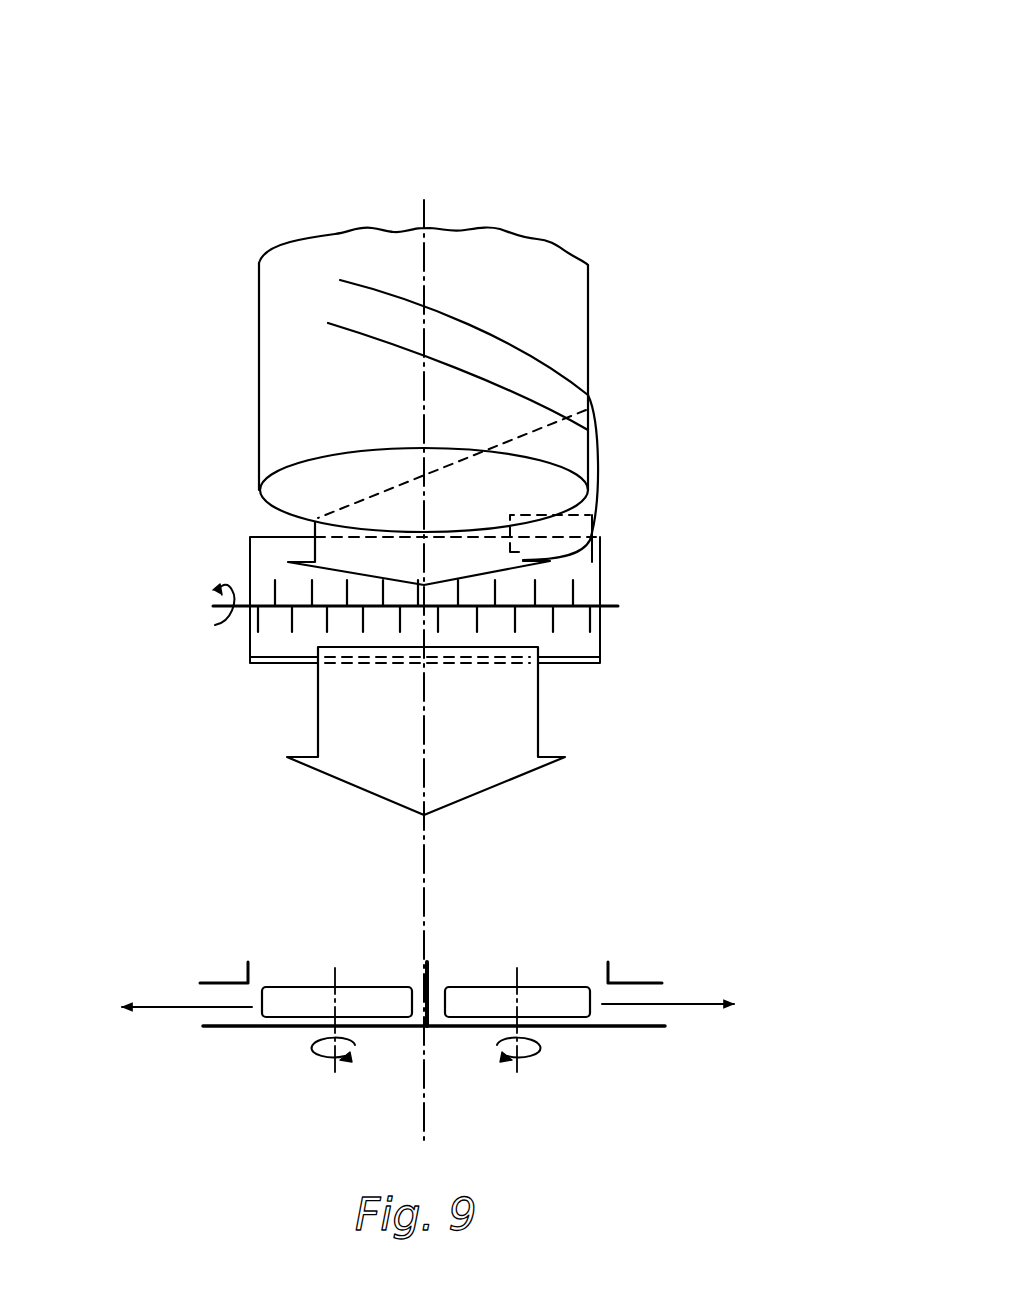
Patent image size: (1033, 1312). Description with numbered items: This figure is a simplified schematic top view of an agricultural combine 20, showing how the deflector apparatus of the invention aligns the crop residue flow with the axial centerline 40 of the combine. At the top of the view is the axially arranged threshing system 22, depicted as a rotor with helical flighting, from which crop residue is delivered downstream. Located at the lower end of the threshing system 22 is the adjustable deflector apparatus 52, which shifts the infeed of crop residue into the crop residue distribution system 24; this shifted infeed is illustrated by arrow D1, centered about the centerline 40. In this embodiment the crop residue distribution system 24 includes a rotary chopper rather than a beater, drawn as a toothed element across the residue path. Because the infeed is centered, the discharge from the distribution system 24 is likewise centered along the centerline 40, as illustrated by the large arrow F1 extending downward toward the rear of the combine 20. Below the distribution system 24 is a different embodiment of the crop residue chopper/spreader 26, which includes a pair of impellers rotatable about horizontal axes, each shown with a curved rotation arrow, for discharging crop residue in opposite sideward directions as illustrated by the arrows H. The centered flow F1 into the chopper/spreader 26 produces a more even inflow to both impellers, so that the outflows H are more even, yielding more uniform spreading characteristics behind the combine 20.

The agricultural combine 20 is at (664, 118).
The axially arranged threshing system 22 is at (592, 264).
The crop residue distribution system 24 is at (600, 535).
The crop residue chopper/spreader 26 is at (642, 948).
The centerline 40 is at (426, 210).
The adjustable deflector apparatus 52 is at (597, 511).
The crop residue flow D1 is at (602, 560).
The arrow indicating discharge flow F1 is at (540, 717).
The outflows H is at (181, 1003).